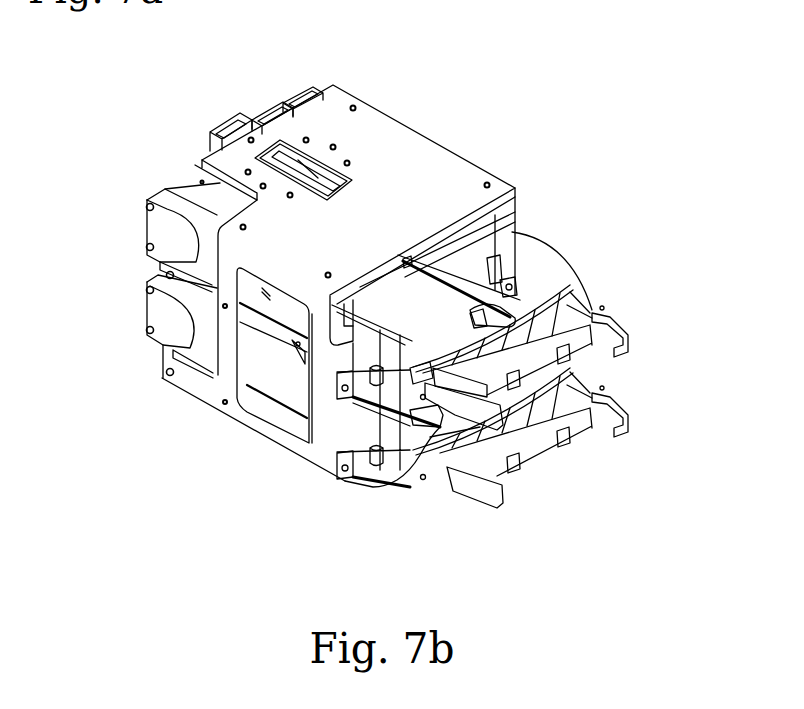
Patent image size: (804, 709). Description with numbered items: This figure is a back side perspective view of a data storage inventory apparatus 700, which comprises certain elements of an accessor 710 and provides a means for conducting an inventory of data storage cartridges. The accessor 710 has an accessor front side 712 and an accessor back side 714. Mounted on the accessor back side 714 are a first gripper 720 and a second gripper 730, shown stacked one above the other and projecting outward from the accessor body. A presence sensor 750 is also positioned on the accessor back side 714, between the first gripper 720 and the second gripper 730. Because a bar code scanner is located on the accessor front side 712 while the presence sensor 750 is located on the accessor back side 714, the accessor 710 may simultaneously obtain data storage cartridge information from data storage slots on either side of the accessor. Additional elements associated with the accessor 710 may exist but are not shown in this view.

The data storage inventory apparatus 700 is at (650, 60).
The accessor 710 is at (393, 112).
The accessor front side 712 is at (147, 343).
The accessor back side 714 is at (337, 427).
The first gripper 720 is at (627, 327).
The second gripper 730 is at (622, 402).
The presence sensor 750 is at (432, 432).